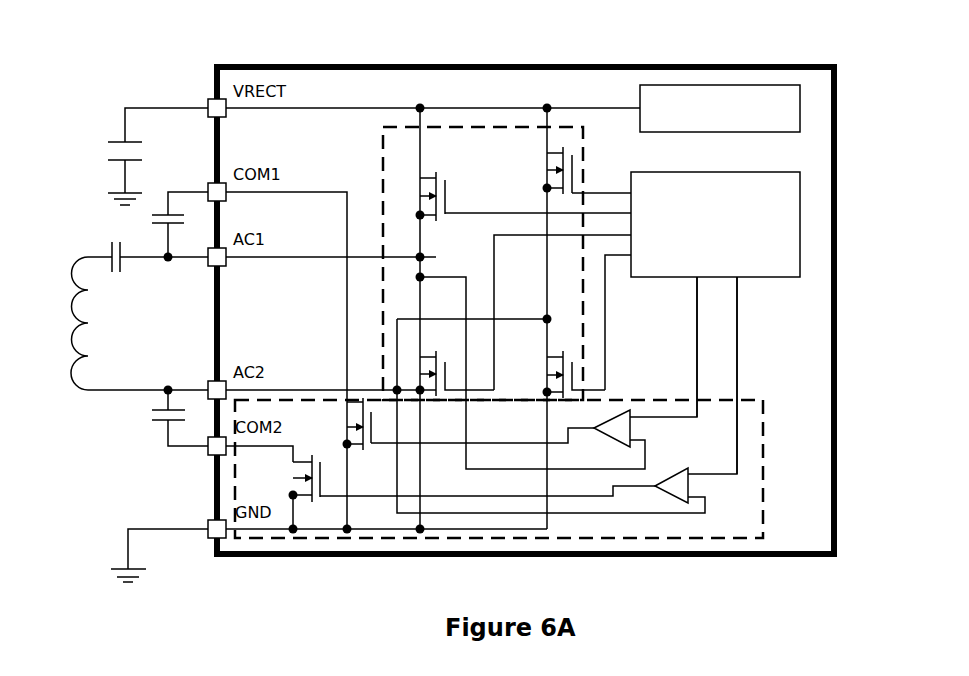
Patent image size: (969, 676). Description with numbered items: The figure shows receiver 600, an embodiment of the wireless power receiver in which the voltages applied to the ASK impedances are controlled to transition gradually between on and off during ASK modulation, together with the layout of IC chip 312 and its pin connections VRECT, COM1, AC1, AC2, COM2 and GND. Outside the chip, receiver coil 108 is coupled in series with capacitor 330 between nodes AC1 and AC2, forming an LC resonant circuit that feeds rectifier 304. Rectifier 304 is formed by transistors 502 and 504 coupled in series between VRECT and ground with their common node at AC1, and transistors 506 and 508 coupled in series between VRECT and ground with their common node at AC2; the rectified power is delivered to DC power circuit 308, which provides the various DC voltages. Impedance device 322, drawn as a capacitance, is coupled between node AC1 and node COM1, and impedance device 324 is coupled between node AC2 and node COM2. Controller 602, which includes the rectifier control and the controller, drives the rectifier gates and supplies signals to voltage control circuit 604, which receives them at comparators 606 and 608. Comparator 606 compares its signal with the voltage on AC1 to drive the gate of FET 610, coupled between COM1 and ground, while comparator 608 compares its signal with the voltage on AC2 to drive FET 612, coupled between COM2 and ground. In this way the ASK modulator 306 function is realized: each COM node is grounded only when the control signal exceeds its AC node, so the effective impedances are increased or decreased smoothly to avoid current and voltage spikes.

The receiver 600 is at (98, 77).
The DC power circuit 308 is at (725, 90).
The transistor 506 is at (575, 172).
The transistor 502 is at (432, 222).
The controller 602 is at (758, 271).
The capacitor 330 is at (106, 253).
The impedance device 322 is at (167, 218).
The receiver coil 108 is at (68, 295).
The impedance device 324 is at (153, 418).
The FET 612 is at (287, 490).
The FET 610 is at (353, 425).
The transistor 504 is at (457, 340).
The transistor 508 is at (557, 373).
The comparator 606 is at (603, 418).
The comparator 608 is at (683, 488).
The voltage control circuit 604 is at (755, 440).
The IC chip 312 is at (305, 314).
The rectifier 304 is at (503, 180).
The ASK modulator 306 is at (802, 392).